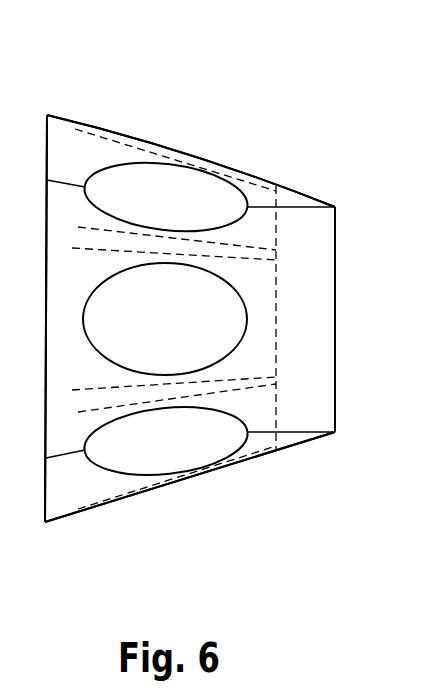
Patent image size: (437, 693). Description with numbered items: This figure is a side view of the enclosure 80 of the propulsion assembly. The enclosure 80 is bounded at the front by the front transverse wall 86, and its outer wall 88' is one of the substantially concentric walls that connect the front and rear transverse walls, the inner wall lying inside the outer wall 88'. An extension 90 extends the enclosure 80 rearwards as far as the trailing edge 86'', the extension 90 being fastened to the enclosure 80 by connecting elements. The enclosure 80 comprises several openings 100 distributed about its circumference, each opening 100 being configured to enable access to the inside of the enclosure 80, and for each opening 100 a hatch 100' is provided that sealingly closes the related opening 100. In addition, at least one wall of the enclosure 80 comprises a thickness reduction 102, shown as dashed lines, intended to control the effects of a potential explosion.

The enclosure 80 is at (96, 126).
The extension 90 is at (302, 190).
The front transverse wall 86 is at (28, 350).
The trailing edge 86'' is at (356, 287).
The outer wall 88' is at (190, 502).
The opening 100 is at (241, 313).
The hatch 100' is at (248, 325).
The thickness reduction 102 is at (243, 257).